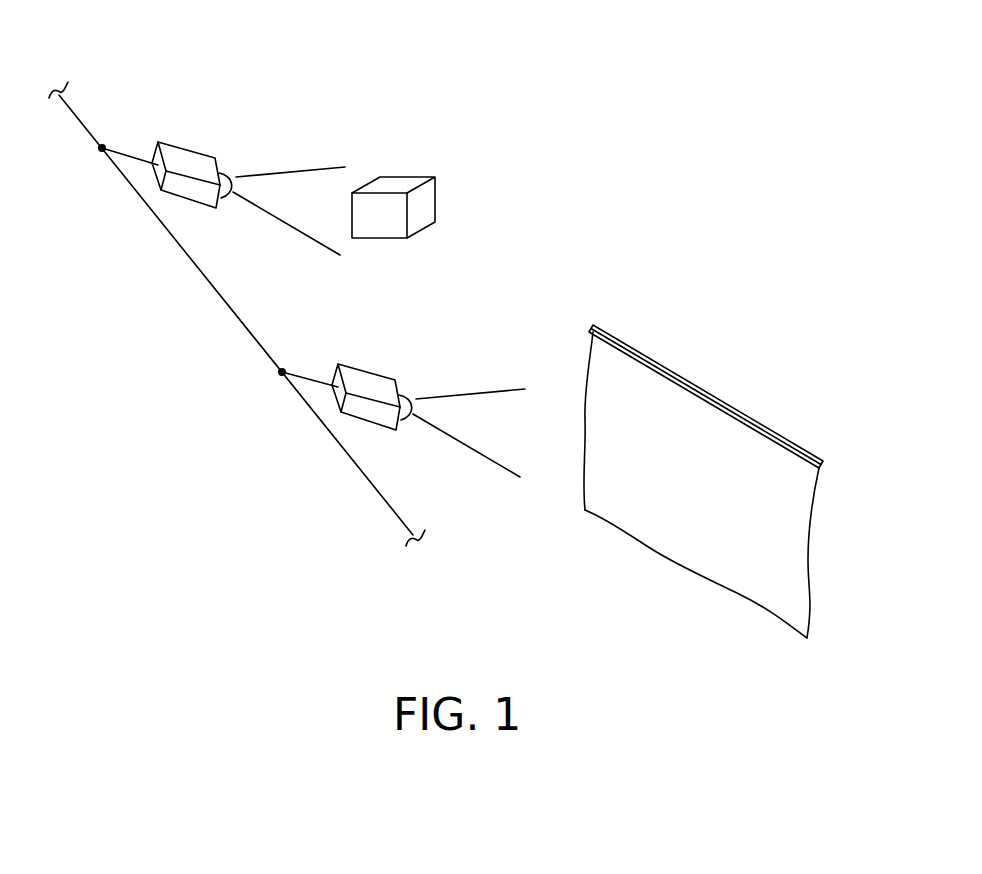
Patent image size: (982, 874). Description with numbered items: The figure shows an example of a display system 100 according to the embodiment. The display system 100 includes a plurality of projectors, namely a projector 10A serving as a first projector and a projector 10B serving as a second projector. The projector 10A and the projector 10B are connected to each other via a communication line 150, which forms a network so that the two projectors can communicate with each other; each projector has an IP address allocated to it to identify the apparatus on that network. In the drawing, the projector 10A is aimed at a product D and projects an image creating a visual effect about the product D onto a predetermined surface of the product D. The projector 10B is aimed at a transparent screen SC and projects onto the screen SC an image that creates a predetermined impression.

The display system 100 is at (568, 33).
The communication line 150 is at (195, 263).
The first projector 10A is at (197, 148).
The second projector 10B is at (380, 372).
The product D is at (412, 173).
The transparent screen SC is at (793, 527).